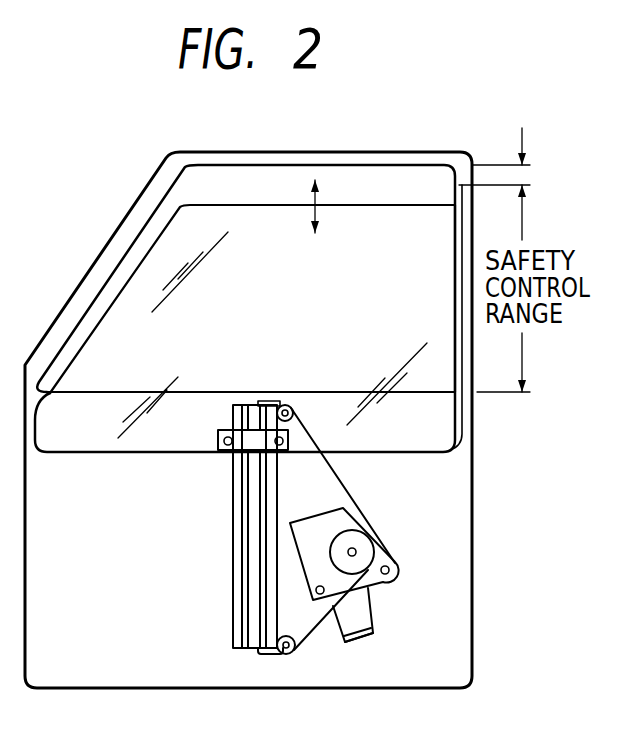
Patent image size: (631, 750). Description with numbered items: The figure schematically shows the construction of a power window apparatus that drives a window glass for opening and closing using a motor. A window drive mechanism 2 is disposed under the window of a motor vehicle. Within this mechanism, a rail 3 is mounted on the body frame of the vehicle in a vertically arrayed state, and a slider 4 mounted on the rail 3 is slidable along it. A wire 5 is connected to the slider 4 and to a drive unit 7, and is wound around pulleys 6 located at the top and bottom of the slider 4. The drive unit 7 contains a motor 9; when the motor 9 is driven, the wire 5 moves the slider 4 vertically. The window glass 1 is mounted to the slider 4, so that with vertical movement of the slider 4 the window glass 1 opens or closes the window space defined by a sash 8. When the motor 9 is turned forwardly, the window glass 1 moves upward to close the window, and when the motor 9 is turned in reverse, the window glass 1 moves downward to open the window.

The window glass 1 is at (450, 432).
The window drive mechanism 2 is at (413, 561).
The rail 3 is at (242, 625).
The slider 4 is at (247, 443).
The wire 5 is at (315, 628).
The pulleys 6 is at (290, 405).
The drive unit 7 is at (358, 593).
The sash 8 is at (259, 152).
The motor 9 is at (360, 628).